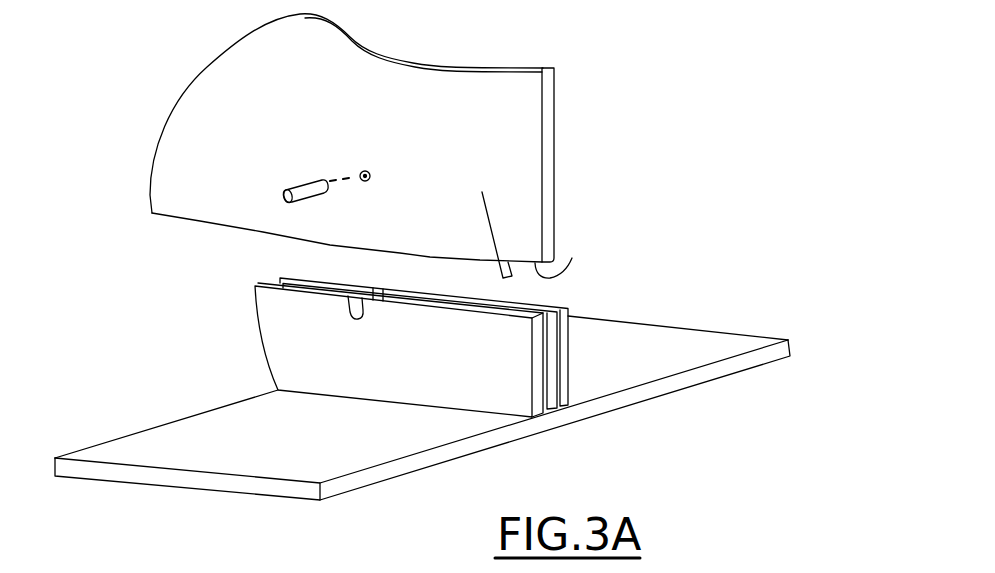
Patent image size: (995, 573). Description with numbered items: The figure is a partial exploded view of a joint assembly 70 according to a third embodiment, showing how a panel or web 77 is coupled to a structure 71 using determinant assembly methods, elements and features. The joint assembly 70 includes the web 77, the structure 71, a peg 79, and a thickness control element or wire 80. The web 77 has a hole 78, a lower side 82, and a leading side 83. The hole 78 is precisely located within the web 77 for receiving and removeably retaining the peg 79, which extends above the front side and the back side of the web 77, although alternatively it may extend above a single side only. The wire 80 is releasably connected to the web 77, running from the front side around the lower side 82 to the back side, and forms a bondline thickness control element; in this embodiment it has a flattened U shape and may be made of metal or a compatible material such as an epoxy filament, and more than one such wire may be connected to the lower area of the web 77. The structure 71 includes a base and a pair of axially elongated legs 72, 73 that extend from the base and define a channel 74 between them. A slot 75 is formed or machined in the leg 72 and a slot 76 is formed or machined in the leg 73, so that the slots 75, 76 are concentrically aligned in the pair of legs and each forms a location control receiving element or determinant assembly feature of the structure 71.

The joint assembly 70 is at (100, 346).
The structure 71 is at (220, 427).
The leg 72 is at (437, 383).
The leg 73 is at (567, 367).
The channel 74 is at (570, 320).
The slot 75 is at (352, 318).
The slot 76 is at (383, 293).
The web 77 is at (533, 92).
The hole 78 is at (365, 168).
The peg 79 is at (308, 182).
The wire 80 is at (488, 197).
The lower side 82 is at (572, 258).
The leading side 83 is at (583, 428).